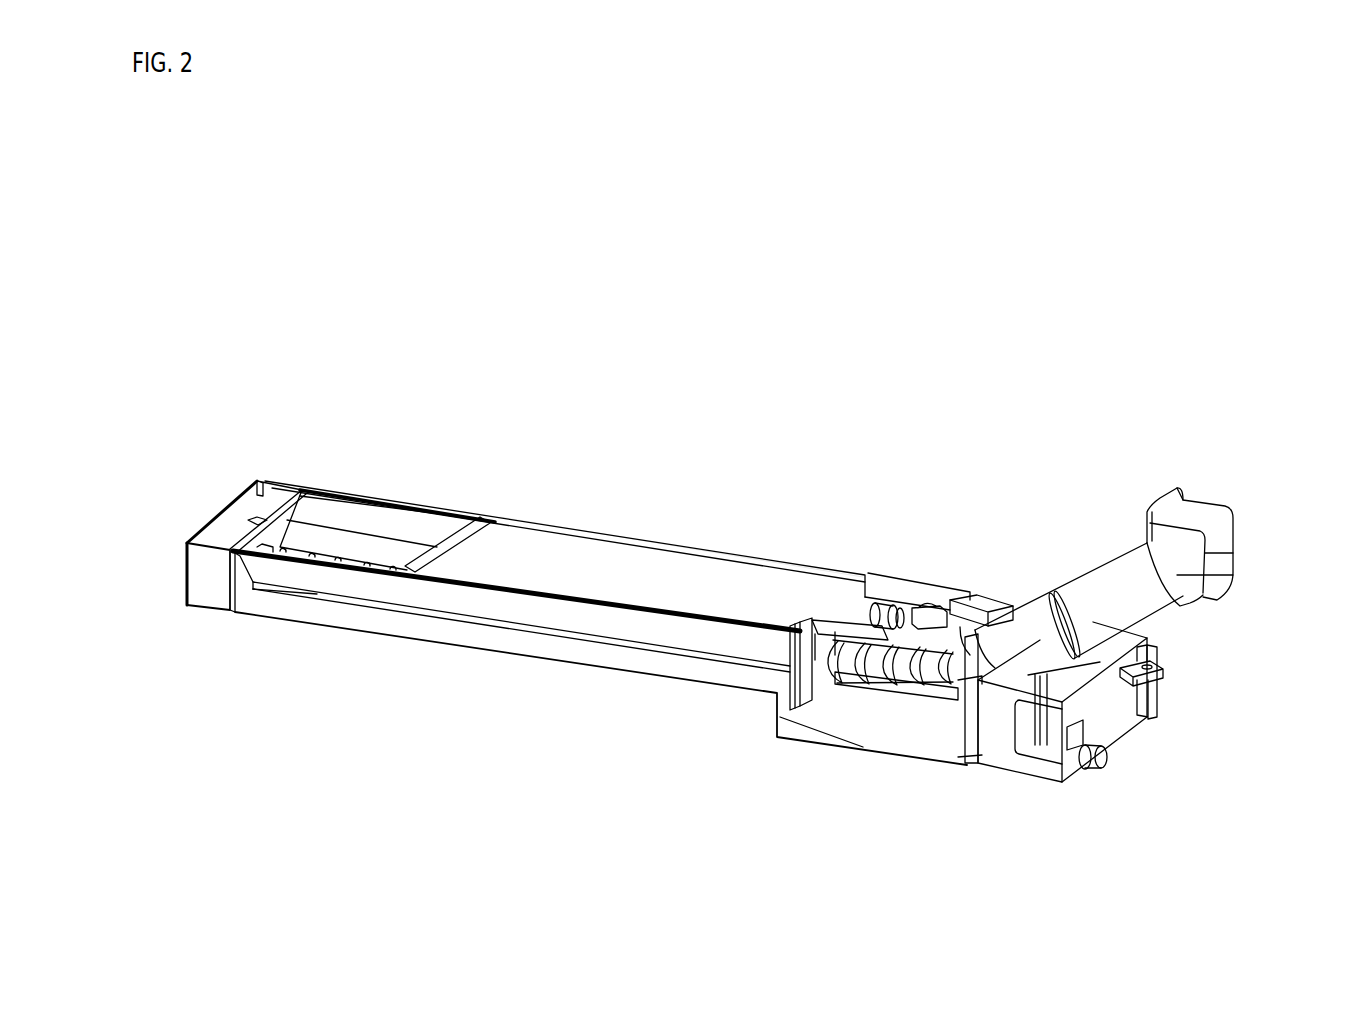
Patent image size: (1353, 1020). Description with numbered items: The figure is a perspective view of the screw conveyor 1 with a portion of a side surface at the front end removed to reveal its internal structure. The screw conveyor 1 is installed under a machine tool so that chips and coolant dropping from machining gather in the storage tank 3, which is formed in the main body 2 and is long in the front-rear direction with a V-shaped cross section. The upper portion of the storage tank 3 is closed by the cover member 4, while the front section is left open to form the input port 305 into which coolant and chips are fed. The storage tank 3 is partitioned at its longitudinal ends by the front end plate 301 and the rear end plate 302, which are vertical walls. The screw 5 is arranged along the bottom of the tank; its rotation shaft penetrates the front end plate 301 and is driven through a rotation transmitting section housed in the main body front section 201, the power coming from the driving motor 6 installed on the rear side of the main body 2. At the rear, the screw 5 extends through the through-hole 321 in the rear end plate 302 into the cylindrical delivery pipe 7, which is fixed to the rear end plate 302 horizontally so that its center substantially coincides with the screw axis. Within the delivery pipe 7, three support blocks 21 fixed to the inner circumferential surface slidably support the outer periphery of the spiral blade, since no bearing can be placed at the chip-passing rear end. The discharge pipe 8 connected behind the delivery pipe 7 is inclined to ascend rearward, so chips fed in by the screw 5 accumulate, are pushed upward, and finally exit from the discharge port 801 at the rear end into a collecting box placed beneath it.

The screw conveyor 1 is at (743, 333).
The main body 2 is at (530, 648).
The main body front section 201 is at (232, 527).
The storage tank 3 is at (313, 577).
The front end plate 301 is at (275, 538).
The rear end plate 302 is at (802, 693).
The input port 305 is at (390, 523).
The through-hole 321 is at (823, 627).
The cover member 4 is at (627, 567).
The screw 5 is at (910, 667).
The support blocks 21 is at (867, 690).
The driving motor 6 is at (933, 610).
The delivery pipe 7 is at (948, 633).
The discharge pipe 8 is at (1110, 577).
The discharge port 801 is at (1210, 590).